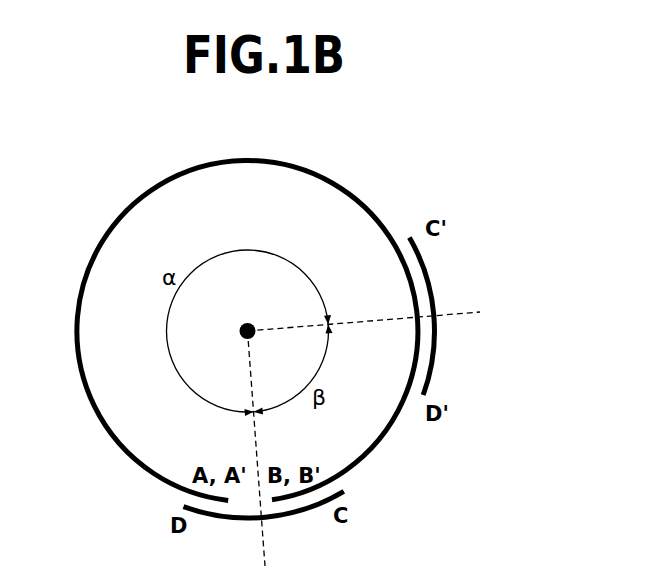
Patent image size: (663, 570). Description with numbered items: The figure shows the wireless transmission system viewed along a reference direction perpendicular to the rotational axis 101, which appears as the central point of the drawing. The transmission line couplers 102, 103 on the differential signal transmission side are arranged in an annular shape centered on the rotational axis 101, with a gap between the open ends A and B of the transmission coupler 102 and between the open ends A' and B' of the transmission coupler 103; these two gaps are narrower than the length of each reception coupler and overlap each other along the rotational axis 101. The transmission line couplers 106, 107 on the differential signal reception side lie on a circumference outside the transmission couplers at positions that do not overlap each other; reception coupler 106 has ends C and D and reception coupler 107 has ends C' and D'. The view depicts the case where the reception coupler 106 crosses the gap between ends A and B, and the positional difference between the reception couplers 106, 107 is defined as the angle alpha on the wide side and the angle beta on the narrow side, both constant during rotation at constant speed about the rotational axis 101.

The rotational axis 101 is at (247, 322).
The transmission line coupler 102 is at (229, 304).
The transmission line coupler 103 is at (110, 183).
The transmission line coupler 106 is at (358, 503).
The transmission line coupler 107 is at (448, 376).